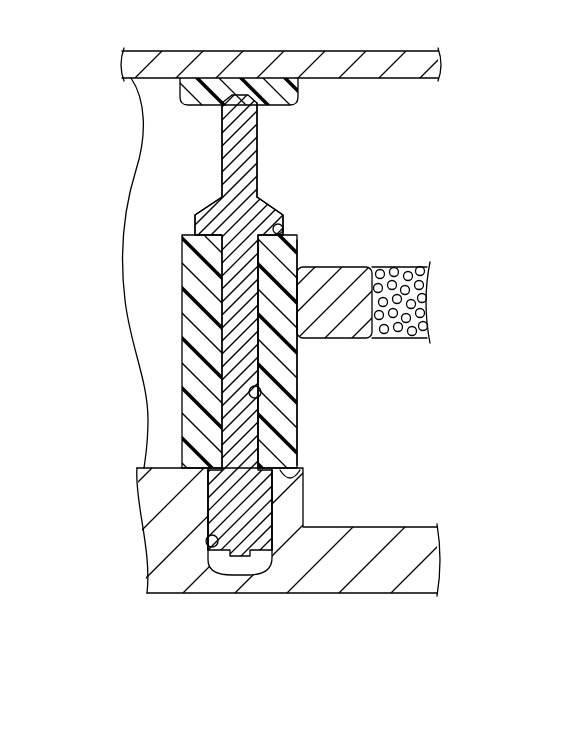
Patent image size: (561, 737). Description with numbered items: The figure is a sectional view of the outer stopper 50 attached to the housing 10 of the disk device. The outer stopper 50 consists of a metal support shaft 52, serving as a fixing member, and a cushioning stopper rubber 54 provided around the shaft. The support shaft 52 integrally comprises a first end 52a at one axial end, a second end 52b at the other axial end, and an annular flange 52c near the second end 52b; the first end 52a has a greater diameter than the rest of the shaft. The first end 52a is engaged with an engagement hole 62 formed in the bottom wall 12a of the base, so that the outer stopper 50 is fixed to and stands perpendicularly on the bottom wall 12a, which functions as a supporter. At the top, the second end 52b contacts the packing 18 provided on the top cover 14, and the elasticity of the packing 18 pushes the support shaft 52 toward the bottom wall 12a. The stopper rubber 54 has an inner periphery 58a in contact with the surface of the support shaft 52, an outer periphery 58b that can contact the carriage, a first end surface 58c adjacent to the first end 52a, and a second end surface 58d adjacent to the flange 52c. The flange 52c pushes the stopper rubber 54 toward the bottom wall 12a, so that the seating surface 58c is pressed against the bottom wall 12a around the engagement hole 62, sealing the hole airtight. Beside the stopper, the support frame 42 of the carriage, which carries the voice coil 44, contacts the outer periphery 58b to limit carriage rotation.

The housing 10 is at (280, 365).
The bottom wall 12a is at (372, 585).
The top cover 14 is at (378, 62).
The packing 18 is at (290, 98).
The support frame 42 is at (330, 276).
The voice coil 44 is at (426, 297).
The outer stopper 50 is at (182, 268).
The support shaft 52 is at (232, 408).
The first end 52a is at (218, 509).
The second end 52b is at (228, 126).
The annular flange 52c is at (210, 215).
The stopper rubber 54 is at (192, 358).
The inner periphery 58a is at (262, 397).
The outer periphery 58b is at (298, 430).
The first end surface 58c is at (300, 478).
The second end surface 58d is at (280, 232).
The engagement hole 62 is at (208, 558).